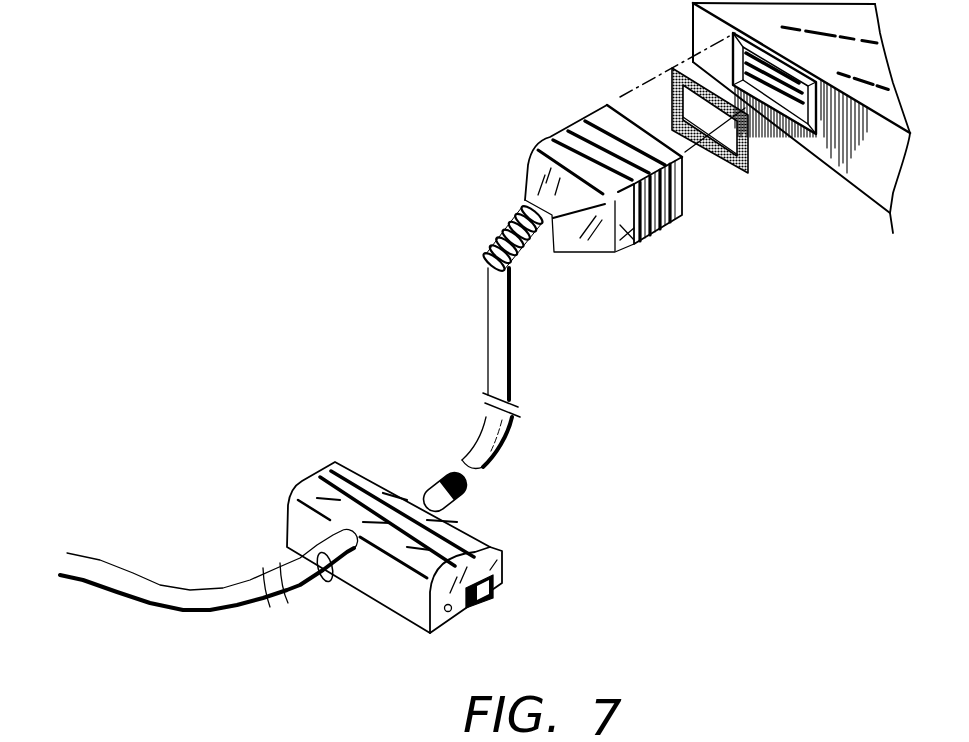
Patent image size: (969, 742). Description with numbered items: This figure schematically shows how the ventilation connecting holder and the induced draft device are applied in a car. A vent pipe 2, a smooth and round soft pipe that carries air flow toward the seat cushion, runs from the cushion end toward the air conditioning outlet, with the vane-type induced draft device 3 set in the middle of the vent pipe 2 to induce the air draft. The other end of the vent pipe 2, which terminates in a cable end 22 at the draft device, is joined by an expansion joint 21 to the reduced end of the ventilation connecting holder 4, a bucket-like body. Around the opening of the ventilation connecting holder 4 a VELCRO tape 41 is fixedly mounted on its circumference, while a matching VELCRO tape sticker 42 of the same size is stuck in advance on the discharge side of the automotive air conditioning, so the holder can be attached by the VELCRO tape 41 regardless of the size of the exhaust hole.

The vent pipe 2 is at (495, 375).
The vane-type induced draft device 3 is at (352, 460).
The ventilation connecting holder 4 is at (637, 237).
The expansion joint 21 is at (528, 250).
The cable end plug 22 is at (327, 582).
The VELCRO tape 41 is at (685, 192).
The VELCRO tape sticker 42 is at (748, 172).